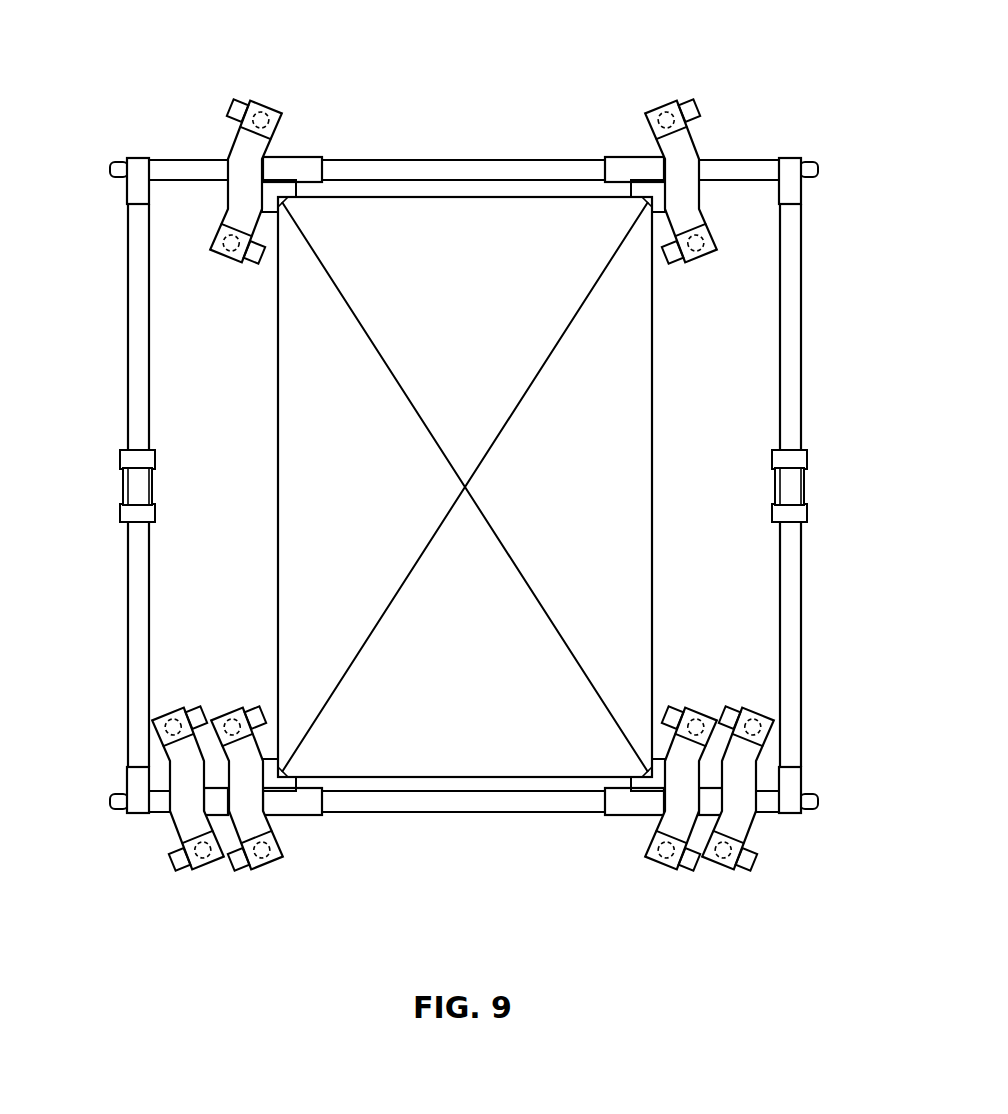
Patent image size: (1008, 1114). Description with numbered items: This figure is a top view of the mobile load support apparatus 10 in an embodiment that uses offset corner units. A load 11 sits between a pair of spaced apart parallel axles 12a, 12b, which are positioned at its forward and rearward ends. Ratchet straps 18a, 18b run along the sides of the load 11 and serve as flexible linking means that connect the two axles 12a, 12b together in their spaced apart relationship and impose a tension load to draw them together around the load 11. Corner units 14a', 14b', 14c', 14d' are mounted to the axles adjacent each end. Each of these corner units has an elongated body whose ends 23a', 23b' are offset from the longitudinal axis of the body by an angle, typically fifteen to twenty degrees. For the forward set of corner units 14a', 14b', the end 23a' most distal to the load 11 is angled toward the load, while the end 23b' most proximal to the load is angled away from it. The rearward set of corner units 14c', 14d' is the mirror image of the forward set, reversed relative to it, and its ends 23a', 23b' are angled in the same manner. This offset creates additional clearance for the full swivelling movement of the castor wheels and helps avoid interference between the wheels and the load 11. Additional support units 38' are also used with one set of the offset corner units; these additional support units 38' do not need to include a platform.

The mobile load support apparatus 10 is at (122, 40).
The load 11 is at (578, 487).
The axle 12a is at (455, 158).
The axle 12b is at (455, 813).
The corner unit 14a' is at (200, 181).
The corner unit 14b' is at (737, 181).
The corner unit 14c' is at (628, 792).
The corner unit 14d' is at (306, 789).
The ratchet strap 18a is at (127, 412).
The ratchet strap 18b is at (802, 412).
The end of the elongated body 23a' is at (473, 492).
The end of the elongated body 23b' is at (469, 485).
The additional support unit 38' is at (475, 789).